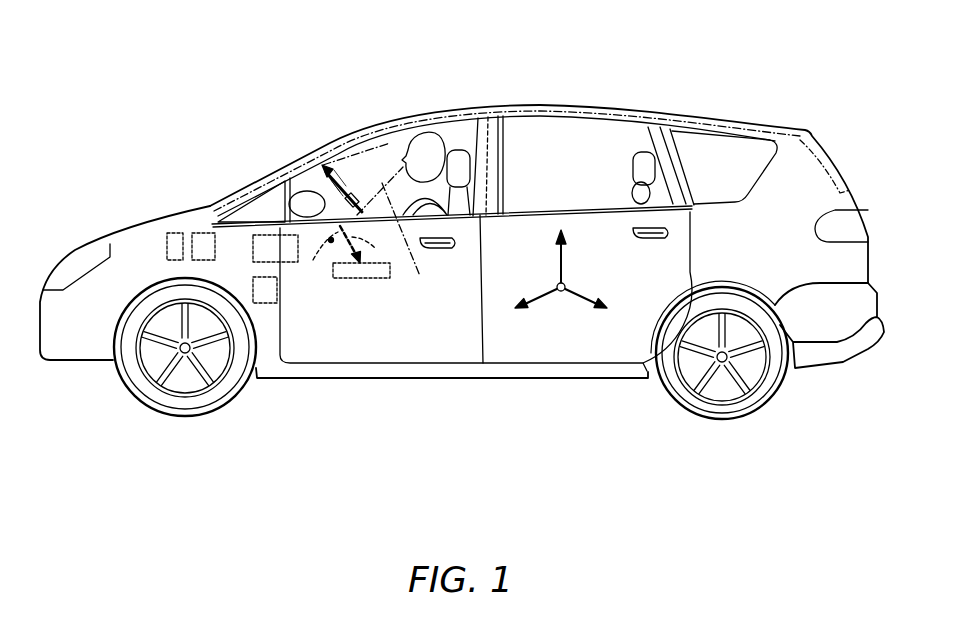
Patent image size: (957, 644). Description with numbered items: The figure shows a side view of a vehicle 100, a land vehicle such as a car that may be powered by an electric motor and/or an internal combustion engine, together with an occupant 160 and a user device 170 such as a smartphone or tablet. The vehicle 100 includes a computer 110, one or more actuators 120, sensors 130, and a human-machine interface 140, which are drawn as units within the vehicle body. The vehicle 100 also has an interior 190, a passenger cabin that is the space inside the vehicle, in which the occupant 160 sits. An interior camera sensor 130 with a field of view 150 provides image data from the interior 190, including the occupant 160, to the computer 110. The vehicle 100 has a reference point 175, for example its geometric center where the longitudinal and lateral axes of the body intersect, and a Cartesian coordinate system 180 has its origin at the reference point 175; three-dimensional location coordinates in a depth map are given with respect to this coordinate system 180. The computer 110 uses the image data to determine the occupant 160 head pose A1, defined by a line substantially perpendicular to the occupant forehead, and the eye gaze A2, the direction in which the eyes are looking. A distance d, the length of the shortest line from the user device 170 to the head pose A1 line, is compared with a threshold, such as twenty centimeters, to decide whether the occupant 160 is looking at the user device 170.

The vehicle 100 is at (700, 112).
The computer 110 is at (196, 232).
The actuator 120 is at (177, 230).
The sensor 130 is at (260, 233).
The human-machine interface 140 is at (267, 307).
The field of view 150 is at (345, 168).
The occupant 160 is at (440, 122).
The user device 170 is at (373, 283).
The reference point 175 is at (565, 286).
The Cartesian coordinate system 180 is at (547, 332).
The interior 190 is at (572, 146).
The head pose A1 is at (373, 130).
The eye gaze A2 is at (405, 241).
The distance d is at (344, 253).